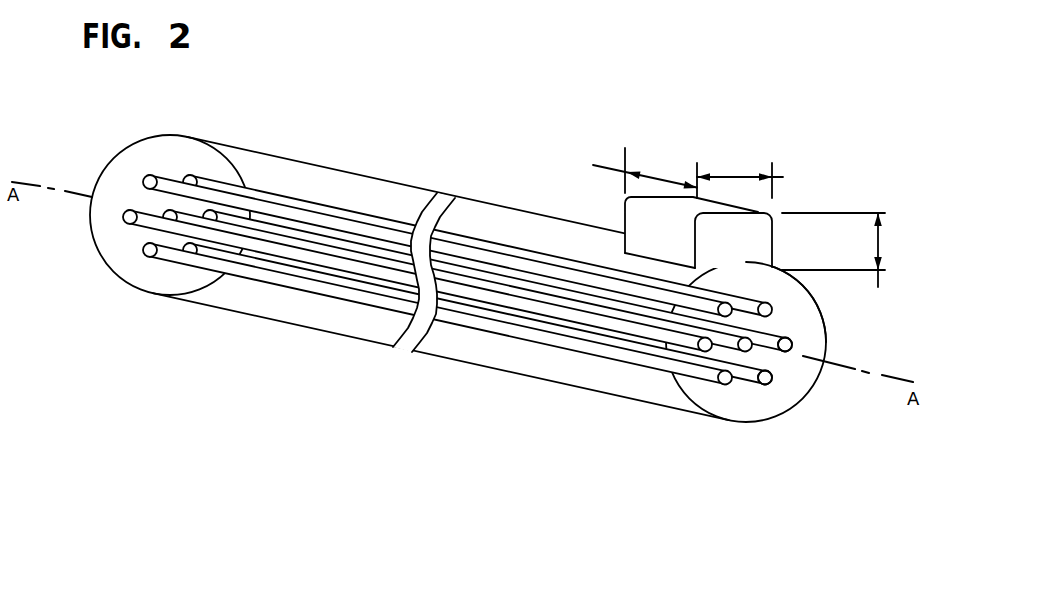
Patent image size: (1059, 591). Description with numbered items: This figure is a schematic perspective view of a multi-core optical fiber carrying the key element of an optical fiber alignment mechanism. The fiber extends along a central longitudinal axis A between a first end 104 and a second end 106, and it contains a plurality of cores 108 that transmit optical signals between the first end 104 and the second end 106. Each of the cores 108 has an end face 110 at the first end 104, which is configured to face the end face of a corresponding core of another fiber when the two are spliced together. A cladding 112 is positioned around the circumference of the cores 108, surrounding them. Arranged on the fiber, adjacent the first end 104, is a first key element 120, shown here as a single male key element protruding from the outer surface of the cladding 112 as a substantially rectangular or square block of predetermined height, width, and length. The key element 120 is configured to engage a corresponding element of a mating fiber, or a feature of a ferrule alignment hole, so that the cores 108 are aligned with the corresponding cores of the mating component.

The first end 104 is at (767, 445).
The second end 106 is at (118, 310).
The cores 108 is at (759, 381).
The end face 110 is at (789, 349).
The cladding 112 is at (818, 340).
The key element 120 is at (815, 197).